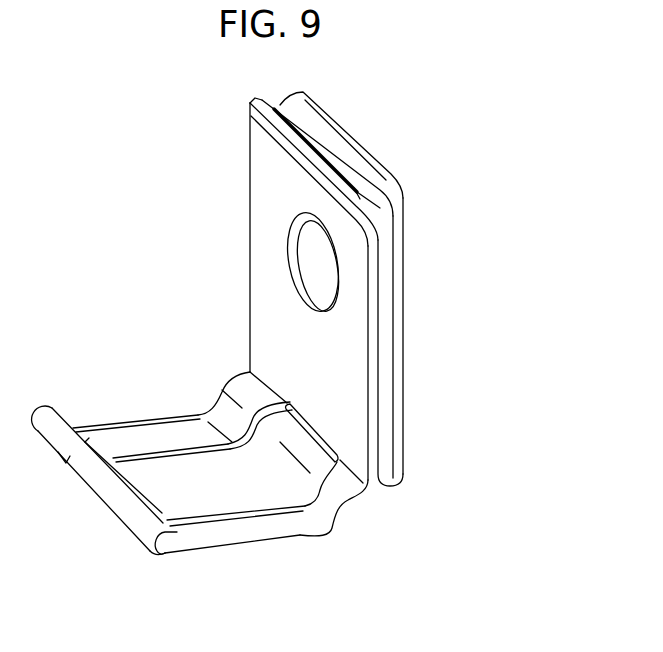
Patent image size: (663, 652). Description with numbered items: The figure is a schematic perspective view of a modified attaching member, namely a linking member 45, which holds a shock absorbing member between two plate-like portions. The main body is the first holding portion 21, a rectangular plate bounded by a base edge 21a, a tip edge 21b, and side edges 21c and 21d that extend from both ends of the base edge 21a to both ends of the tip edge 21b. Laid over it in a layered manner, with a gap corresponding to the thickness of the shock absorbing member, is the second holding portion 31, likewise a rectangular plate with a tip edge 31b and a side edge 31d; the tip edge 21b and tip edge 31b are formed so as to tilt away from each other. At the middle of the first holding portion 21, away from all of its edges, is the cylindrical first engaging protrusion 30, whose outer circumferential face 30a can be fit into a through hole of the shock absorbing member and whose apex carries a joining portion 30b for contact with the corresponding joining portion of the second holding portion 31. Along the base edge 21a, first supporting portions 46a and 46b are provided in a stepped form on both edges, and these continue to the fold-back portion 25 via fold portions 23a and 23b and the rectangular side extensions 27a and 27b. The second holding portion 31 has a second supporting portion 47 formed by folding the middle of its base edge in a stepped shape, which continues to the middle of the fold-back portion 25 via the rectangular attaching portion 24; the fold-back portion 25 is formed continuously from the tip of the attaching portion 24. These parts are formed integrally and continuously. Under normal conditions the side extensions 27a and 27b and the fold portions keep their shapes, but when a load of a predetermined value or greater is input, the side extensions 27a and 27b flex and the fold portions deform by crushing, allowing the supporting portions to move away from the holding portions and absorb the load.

The linking member 45 is at (457, 110).
The first holding portion 21 is at (262, 191).
The base edge 21a is at (294, 413).
The tip edge 21b is at (320, 160).
The side edge 21c is at (250, 138).
The side edge 21d is at (379, 284).
The fold portion 23a is at (180, 433).
The fold portion 23b is at (315, 540).
The attaching portion 24 is at (122, 473).
The fold-back portion 25 is at (124, 498).
The side extension 27a is at (103, 433).
The side extension 27b is at (200, 529).
The first engaging protrusion 30 is at (158, 230).
The outer circumferential face 30a is at (300, 248).
The joining portion 30b is at (302, 269).
The second holding portion 31 is at (363, 170).
The tip edge 31b is at (322, 103).
The side edge 31d is at (404, 247).
The first supporting portion 46a is at (210, 400).
The first supporting portion 46b is at (340, 515).
The second supporting portion 47 is at (307, 447).